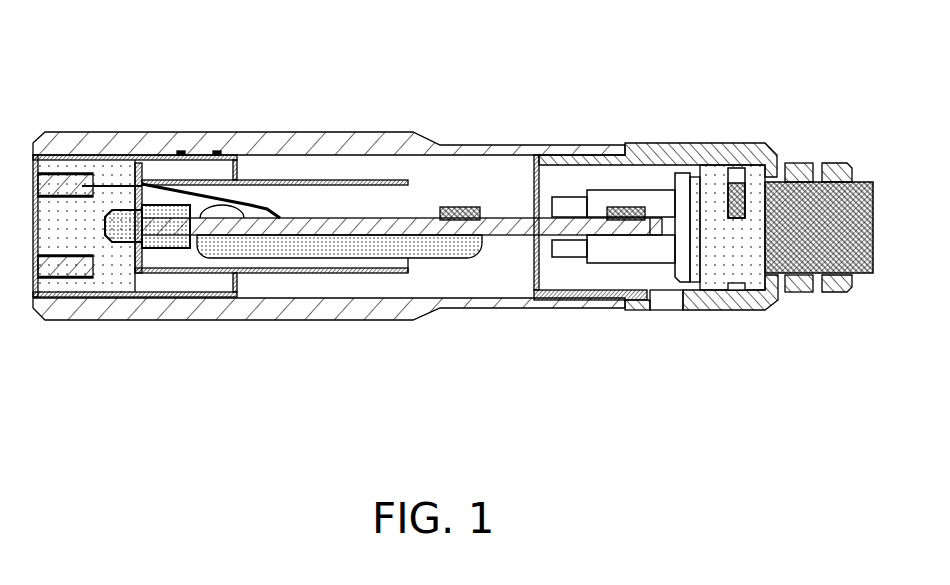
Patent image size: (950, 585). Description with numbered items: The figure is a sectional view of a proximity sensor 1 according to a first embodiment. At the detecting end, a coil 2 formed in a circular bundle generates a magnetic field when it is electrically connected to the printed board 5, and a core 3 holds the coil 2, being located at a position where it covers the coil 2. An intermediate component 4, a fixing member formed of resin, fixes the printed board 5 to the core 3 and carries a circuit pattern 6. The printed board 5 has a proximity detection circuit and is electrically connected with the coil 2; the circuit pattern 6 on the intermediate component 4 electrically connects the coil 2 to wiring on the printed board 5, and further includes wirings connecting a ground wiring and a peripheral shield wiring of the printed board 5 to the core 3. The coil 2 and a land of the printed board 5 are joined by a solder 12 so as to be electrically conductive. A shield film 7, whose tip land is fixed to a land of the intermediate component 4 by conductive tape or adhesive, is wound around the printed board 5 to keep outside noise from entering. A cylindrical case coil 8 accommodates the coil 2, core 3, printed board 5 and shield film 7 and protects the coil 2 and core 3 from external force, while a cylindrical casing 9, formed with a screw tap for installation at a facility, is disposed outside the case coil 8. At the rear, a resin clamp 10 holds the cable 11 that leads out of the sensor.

The proximity sensor 1 is at (583, 50).
The coil 2 is at (63, 183).
The core 3 is at (118, 170).
The intermediate component 4 is at (125, 230).
The printed board 5 is at (503, 227).
The circuit pattern 6 is at (183, 240).
The shield film 7 is at (302, 181).
The case coil 8 is at (187, 156).
The casing 9 is at (403, 141).
The clamp 10 is at (670, 152).
The cable 11 is at (817, 195).
The solder 12 is at (256, 203).